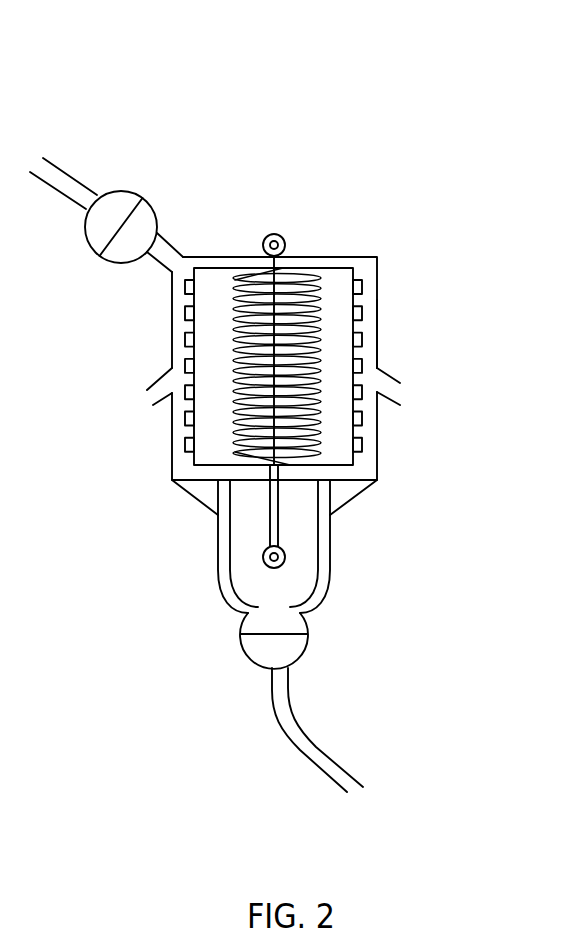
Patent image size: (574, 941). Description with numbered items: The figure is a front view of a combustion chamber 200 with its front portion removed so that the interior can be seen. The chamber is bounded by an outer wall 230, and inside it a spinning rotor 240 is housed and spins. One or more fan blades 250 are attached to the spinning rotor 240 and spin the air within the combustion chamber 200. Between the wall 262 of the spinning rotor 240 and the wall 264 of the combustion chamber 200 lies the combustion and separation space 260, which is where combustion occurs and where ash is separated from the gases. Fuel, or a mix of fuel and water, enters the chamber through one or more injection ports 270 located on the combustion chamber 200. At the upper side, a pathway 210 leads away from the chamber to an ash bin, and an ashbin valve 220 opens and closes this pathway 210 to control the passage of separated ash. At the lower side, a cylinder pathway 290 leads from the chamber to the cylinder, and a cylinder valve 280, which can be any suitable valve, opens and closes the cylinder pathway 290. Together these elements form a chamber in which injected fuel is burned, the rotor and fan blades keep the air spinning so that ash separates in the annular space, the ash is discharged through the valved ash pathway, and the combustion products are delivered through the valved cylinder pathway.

The combustion chamber 200 is at (74, 76).
The pathway 210 is at (65, 183).
The ashbin valve 220 is at (125, 226).
The outer wall 230 is at (378, 275).
The spinning rotor 240 is at (320, 263).
The fan blade 250 is at (362, 447).
The combustion and separation space 260 is at (365, 322).
The wall of the spinning rotor 262 is at (356, 298).
The wall of combustion chamber 264 is at (378, 353).
The injection ports 270 is at (388, 388).
The cylinder valve 280 is at (308, 643).
The cylinder pathway 290 is at (353, 777).